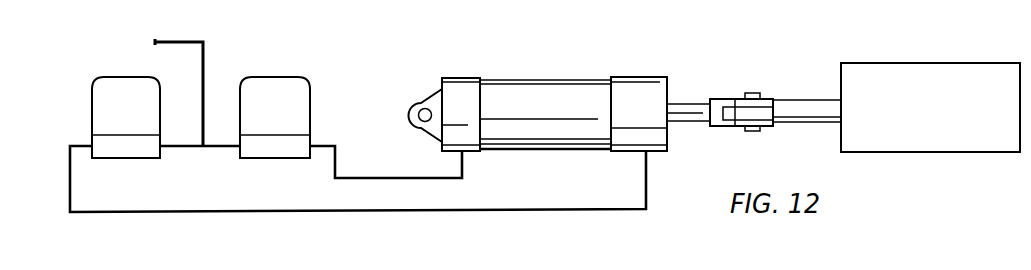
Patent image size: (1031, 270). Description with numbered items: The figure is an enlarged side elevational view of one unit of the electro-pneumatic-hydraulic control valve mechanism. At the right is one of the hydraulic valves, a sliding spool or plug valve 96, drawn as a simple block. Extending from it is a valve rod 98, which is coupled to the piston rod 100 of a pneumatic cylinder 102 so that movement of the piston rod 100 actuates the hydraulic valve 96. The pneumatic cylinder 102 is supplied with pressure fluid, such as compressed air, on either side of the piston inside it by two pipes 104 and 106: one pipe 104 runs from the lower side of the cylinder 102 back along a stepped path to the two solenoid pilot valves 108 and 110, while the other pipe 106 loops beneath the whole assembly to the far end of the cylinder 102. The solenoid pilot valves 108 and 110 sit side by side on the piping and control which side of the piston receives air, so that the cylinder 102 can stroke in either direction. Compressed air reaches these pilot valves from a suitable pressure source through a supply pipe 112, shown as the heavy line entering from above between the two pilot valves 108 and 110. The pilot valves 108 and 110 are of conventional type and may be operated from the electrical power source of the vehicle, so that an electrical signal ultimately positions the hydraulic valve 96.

The sliding spool or plug valve 96 is at (940, 155).
The valve rod 98 is at (807, 78).
The piston rod 100 is at (700, 75).
The pneumatic cylinder 102 is at (557, 58).
The pipe 104 is at (377, 175).
The pipe 106 is at (547, 207).
The solenoid pilot valve 108 is at (113, 76).
The solenoid pilot valve 110 is at (300, 74).
The supply pipe 112 is at (206, 64).